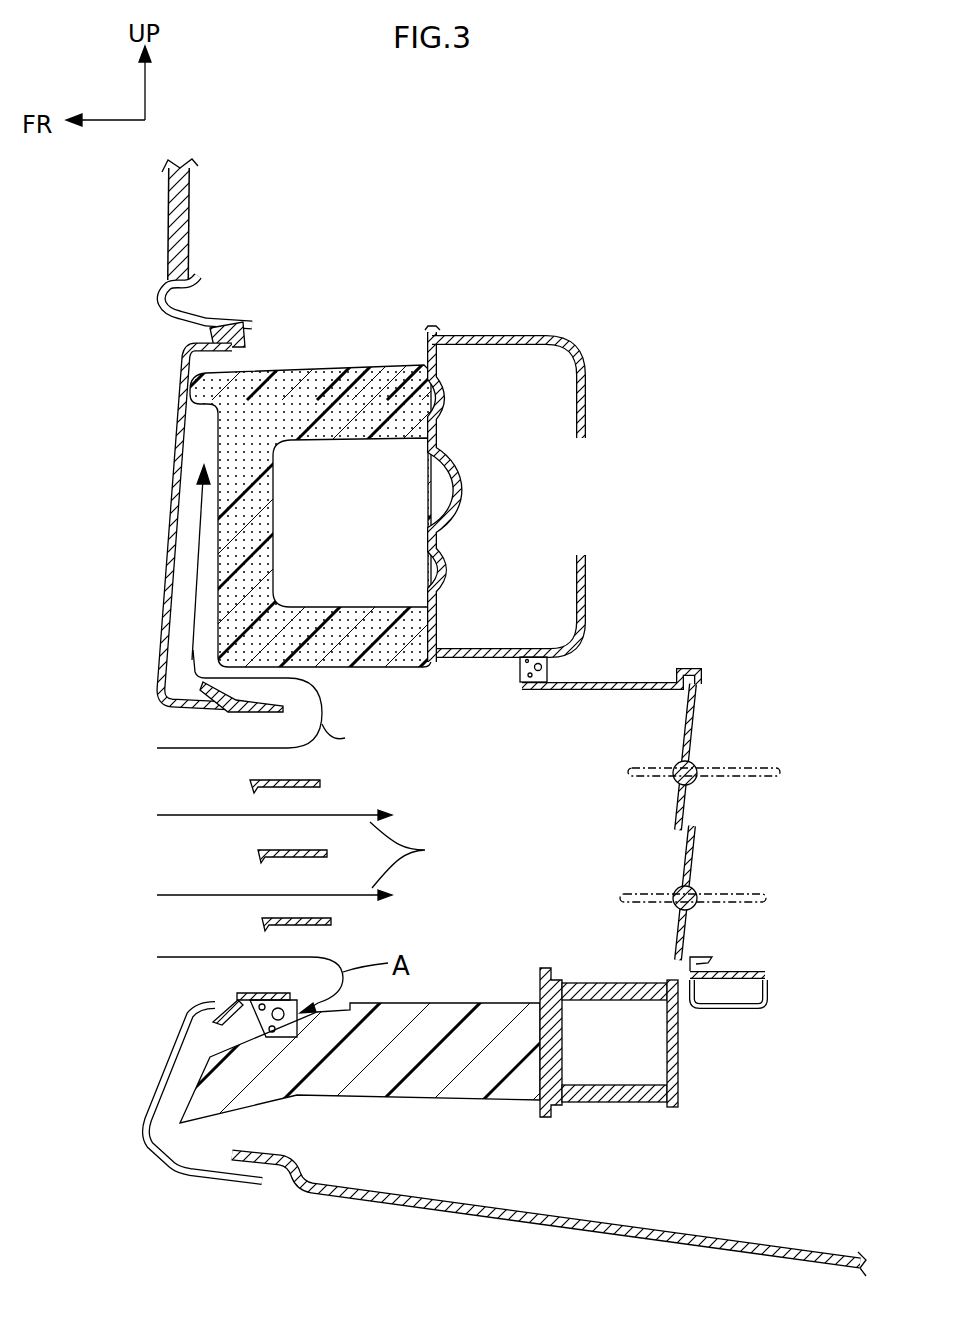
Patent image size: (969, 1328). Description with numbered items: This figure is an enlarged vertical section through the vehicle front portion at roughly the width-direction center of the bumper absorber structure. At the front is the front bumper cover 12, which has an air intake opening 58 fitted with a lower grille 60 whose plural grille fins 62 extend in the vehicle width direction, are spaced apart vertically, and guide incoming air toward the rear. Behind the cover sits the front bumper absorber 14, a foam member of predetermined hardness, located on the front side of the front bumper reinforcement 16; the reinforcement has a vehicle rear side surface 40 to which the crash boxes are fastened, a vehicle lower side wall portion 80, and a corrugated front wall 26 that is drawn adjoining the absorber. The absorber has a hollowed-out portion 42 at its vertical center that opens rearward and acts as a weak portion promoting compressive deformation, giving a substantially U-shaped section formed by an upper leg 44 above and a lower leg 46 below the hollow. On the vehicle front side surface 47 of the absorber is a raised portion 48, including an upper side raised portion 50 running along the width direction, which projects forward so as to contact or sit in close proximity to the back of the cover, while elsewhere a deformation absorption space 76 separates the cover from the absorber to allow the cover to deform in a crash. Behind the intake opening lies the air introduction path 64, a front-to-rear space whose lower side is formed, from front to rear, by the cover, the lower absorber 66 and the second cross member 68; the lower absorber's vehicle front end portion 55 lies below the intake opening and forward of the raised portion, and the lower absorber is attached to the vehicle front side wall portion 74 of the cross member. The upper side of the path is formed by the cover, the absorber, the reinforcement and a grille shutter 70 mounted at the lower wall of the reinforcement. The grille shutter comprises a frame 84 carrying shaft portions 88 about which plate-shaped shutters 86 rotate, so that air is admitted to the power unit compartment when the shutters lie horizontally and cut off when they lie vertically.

The front bumper cover 12 is at (168, 556).
The front bumper absorber 14 is at (503, 435).
The front bumper reinforcement 16 is at (540, 497).
The corrugated wall 26 is at (438, 550).
The vehicle rear side surface 40 is at (587, 410).
The hollowed-out portion 42 is at (360, 541).
The upper leg 44 is at (503, 435).
The lower leg 46 is at (362, 386).
The vehicle front side surface 47 is at (222, 620).
The raised portion 48 is at (192, 383).
The upper side raised portion 50 is at (153, 281).
The vehicle front end portion 55 is at (188, 1125).
The air intake opening 58 is at (305, 840).
The lower grille 60 is at (252, 855).
The grille fins 62 is at (252, 715).
The air introduction path 64 is at (515, 856).
The lower absorber 66 is at (455, 1010).
The second cross member 68 is at (679, 1073).
The grille shutter 70 is at (596, 682).
The vehicle front side wall portion 74 is at (556, 1035).
The deformation absorption space 76 is at (183, 650).
The vehicle lower side wall portion 80 is at (482, 660).
The frame 84 is at (653, 685).
The shutters 86 is at (692, 730).
The shaft portions 88 is at (692, 782).